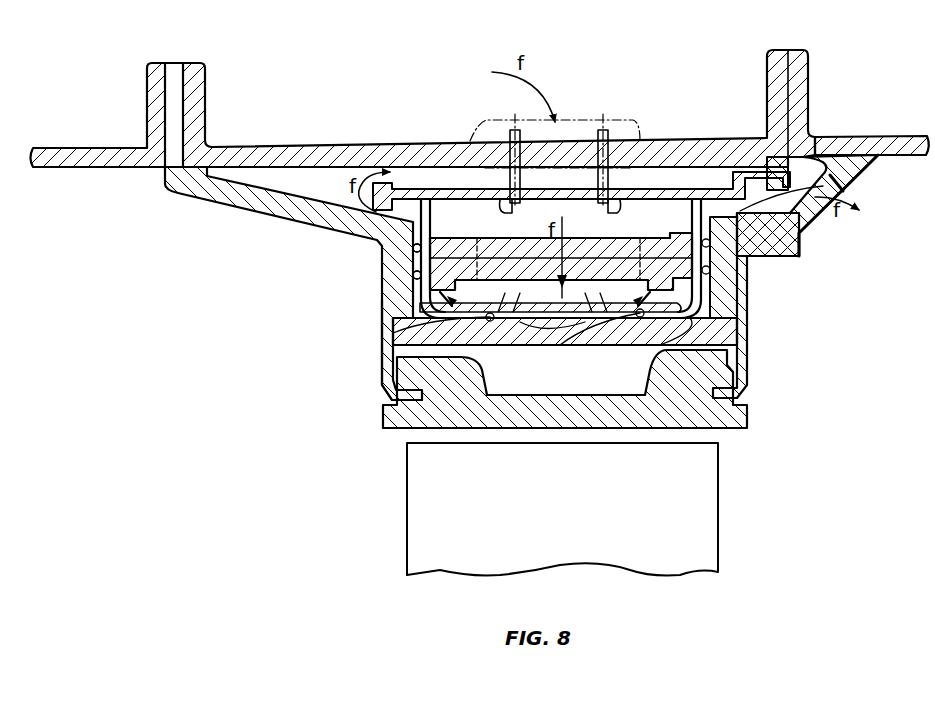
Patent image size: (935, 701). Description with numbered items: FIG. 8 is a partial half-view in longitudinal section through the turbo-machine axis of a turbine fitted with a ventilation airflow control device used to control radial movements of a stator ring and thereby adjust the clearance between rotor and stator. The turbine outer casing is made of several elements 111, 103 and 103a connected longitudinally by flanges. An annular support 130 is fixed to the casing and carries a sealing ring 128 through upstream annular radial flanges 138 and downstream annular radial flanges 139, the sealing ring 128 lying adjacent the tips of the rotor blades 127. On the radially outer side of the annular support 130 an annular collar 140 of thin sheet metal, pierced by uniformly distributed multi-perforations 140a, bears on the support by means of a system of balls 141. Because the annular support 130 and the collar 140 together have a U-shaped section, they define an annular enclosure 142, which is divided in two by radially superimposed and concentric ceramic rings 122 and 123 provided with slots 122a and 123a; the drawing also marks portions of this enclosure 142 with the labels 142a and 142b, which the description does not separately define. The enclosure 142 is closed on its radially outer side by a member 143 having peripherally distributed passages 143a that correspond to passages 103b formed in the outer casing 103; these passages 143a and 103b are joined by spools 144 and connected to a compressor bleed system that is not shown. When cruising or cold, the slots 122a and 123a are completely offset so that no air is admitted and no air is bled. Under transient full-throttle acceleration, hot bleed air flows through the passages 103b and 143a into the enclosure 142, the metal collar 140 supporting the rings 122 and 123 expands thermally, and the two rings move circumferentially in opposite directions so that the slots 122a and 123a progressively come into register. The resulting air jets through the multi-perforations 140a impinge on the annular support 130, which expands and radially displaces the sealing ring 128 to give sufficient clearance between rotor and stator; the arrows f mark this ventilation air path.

The outer casing element 103 is at (272, 147).
The outer casing element 103a is at (892, 138).
The passages 103b is at (487, 130).
The outer casing element 111 is at (62, 148).
The ring 122 is at (712, 282).
The slots 122a is at (525, 250).
The ring 123 is at (797, 232).
The slots 123a is at (583, 252).
The rotor blades 127 is at (568, 494).
The sealing ring 128 is at (723, 415).
The annular support 130 is at (253, 204).
The upstream annular radial flanges 138 is at (386, 375).
The downstream annular radial flanges 139 is at (741, 315).
The annular collar 140 is at (743, 334).
The multi-perforations 140a is at (577, 333).
The balls 141 is at (413, 304).
The annular enclosure 142 is at (318, 255).
The lower seal ring 142a is at (413, 276).
The upper seal ring 142b is at (437, 223).
The radially outer member 143 is at (677, 187).
The passages 143a is at (613, 210).
The spools 144 is at (600, 125).